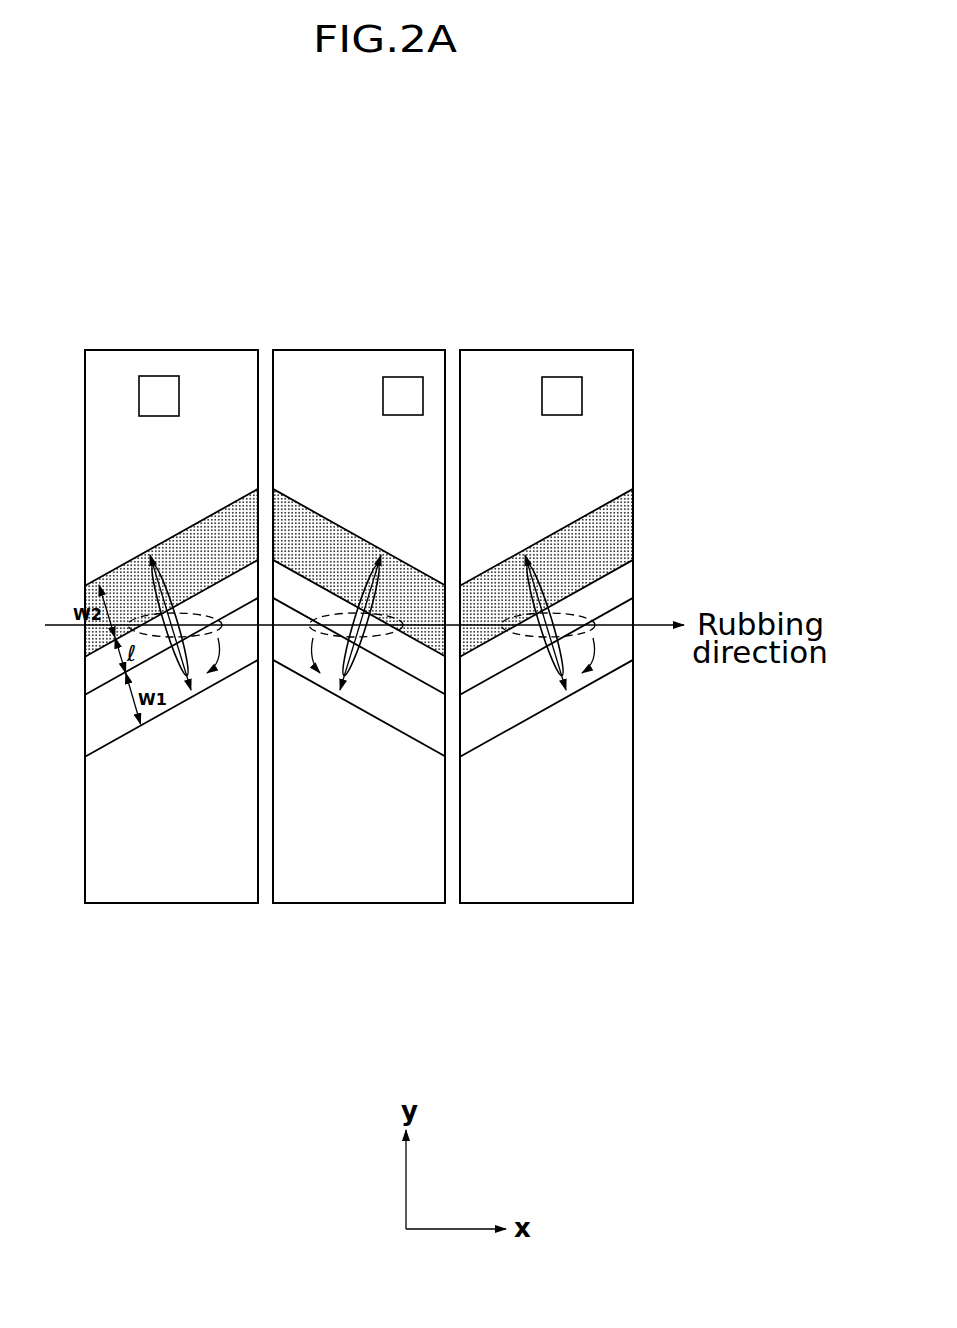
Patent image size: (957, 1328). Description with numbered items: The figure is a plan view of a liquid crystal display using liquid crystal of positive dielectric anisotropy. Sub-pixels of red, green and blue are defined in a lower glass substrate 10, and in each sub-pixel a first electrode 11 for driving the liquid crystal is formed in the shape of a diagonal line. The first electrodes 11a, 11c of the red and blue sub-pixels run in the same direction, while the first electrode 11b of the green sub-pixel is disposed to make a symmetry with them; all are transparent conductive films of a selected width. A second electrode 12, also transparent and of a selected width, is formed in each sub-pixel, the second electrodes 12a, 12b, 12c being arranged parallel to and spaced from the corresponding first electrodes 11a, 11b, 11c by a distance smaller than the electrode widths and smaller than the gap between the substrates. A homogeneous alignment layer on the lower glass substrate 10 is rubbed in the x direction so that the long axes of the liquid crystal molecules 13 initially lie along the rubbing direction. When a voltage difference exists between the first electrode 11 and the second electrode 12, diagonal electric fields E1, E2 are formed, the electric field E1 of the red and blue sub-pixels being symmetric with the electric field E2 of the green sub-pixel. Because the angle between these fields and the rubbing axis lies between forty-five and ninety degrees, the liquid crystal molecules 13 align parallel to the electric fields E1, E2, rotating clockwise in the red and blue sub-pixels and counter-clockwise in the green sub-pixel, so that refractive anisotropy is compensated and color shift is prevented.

The lower glass substrate 10 is at (636, 835).
The first electrode 11 is at (359, 835).
The first electrode 11a is at (123, 720).
The first electrode 11b is at (393, 707).
The first electrode 11c is at (546, 795).
The second electrode 12 is at (359, 420).
The second electrode 12a is at (187, 540).
The second electrode 12b is at (333, 540).
The second electrode 12c is at (546, 454).
The liquid crystal molecules 13 is at (148, 568).
The electric field E1 is at (178, 673).
The electric field E2 is at (343, 690).